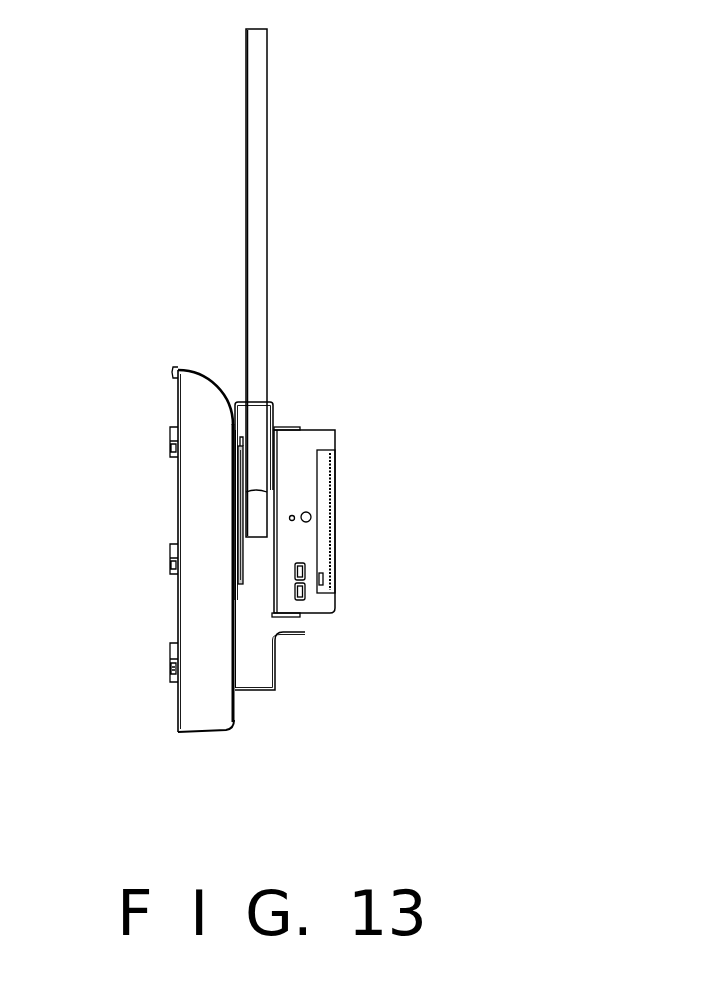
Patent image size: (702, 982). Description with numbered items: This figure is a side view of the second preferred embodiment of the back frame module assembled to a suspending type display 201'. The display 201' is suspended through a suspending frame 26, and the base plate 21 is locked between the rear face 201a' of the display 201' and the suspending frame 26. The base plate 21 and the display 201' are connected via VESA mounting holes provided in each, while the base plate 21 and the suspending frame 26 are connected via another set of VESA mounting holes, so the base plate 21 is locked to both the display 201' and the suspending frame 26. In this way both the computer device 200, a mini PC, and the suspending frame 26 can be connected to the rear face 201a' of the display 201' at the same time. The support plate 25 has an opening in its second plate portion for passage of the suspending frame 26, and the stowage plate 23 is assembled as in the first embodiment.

The suspending type display 201' is at (165, 518).
The rear face of the display 201a' is at (206, 346).
The base plate 21 is at (238, 496).
The support plate 25 is at (271, 405).
The suspending frame 26 is at (259, 456).
The computer device 200 is at (305, 492).
The stowage plate 23 is at (276, 670).